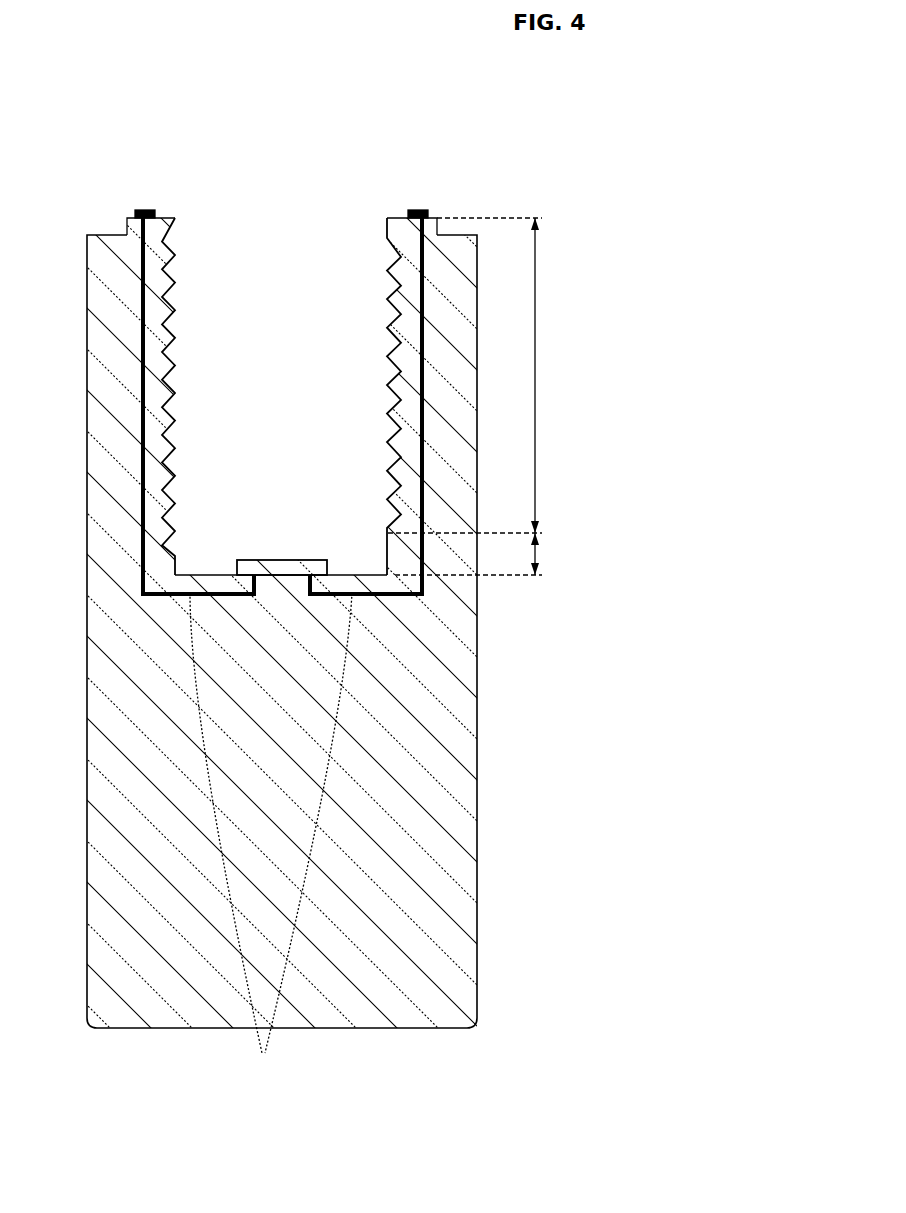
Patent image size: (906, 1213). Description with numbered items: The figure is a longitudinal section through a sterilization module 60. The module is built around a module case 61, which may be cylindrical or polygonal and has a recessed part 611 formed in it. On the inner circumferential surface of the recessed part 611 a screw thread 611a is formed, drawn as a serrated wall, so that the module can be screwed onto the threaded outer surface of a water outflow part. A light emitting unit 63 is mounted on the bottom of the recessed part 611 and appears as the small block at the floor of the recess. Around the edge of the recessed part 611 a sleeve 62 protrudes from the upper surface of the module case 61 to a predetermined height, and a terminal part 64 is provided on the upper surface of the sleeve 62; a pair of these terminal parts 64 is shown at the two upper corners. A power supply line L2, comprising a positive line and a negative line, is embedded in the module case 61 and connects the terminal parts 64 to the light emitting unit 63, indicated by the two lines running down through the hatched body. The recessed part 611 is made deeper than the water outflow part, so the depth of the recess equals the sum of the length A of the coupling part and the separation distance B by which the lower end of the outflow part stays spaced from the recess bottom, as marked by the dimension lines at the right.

The sterilization module 60 is at (71, 178).
The module case 61 is at (477, 898).
The recessed part 611 is at (284, 305).
The screw thread 611a is at (185, 330).
The sleeve 62 is at (132, 221).
The light emitting unit 63 is at (270, 560).
The terminal part 64 is at (143, 210).
The length of the coupling part A is at (471, 375).
The separation distance B is at (475, 554).
The power supply line L2 is at (271, 837).